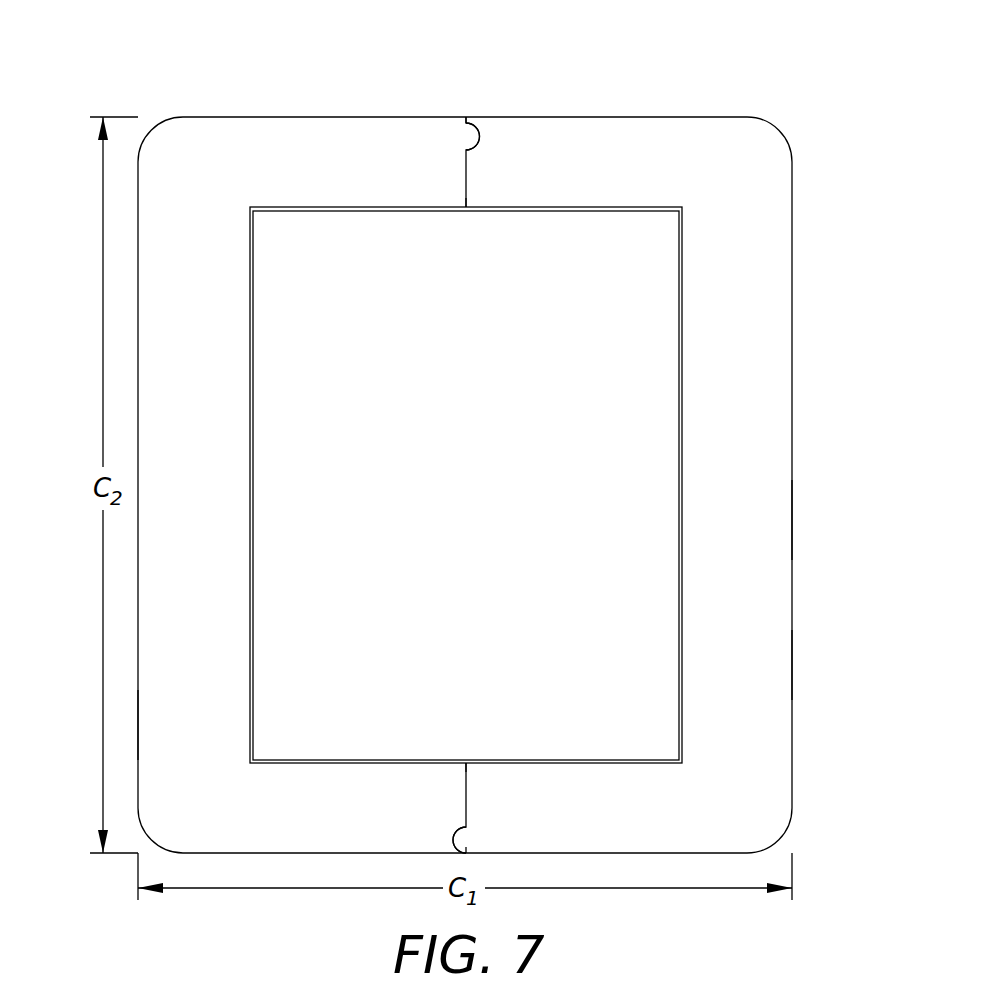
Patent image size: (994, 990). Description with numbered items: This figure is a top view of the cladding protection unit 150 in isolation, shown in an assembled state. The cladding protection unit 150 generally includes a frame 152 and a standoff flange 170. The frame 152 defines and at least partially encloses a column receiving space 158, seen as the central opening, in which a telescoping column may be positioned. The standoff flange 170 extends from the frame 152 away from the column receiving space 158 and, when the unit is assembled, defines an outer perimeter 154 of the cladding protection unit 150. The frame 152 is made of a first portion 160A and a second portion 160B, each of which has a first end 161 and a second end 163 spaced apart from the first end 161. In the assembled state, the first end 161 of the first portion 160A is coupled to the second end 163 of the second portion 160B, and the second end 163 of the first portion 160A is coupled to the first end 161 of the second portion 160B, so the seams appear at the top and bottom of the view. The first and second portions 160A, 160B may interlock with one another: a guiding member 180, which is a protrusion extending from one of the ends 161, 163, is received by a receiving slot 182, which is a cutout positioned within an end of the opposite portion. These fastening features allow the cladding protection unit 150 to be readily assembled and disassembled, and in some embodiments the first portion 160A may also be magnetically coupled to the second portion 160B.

The cladding protection unit 150 is at (760, 84).
The frame 152 is at (792, 670).
The outer perimeter 154 is at (792, 517).
The column receiving space 158 is at (295, 228).
The first portion 160A is at (80, 352).
The second portion 160B is at (845, 370).
The first end 161 is at (470, 212).
The second end 163 is at (462, 207).
The standoff flange 170 is at (137, 725).
The guiding member 180 is at (466, 144).
The receiving slot 182 is at (474, 128).